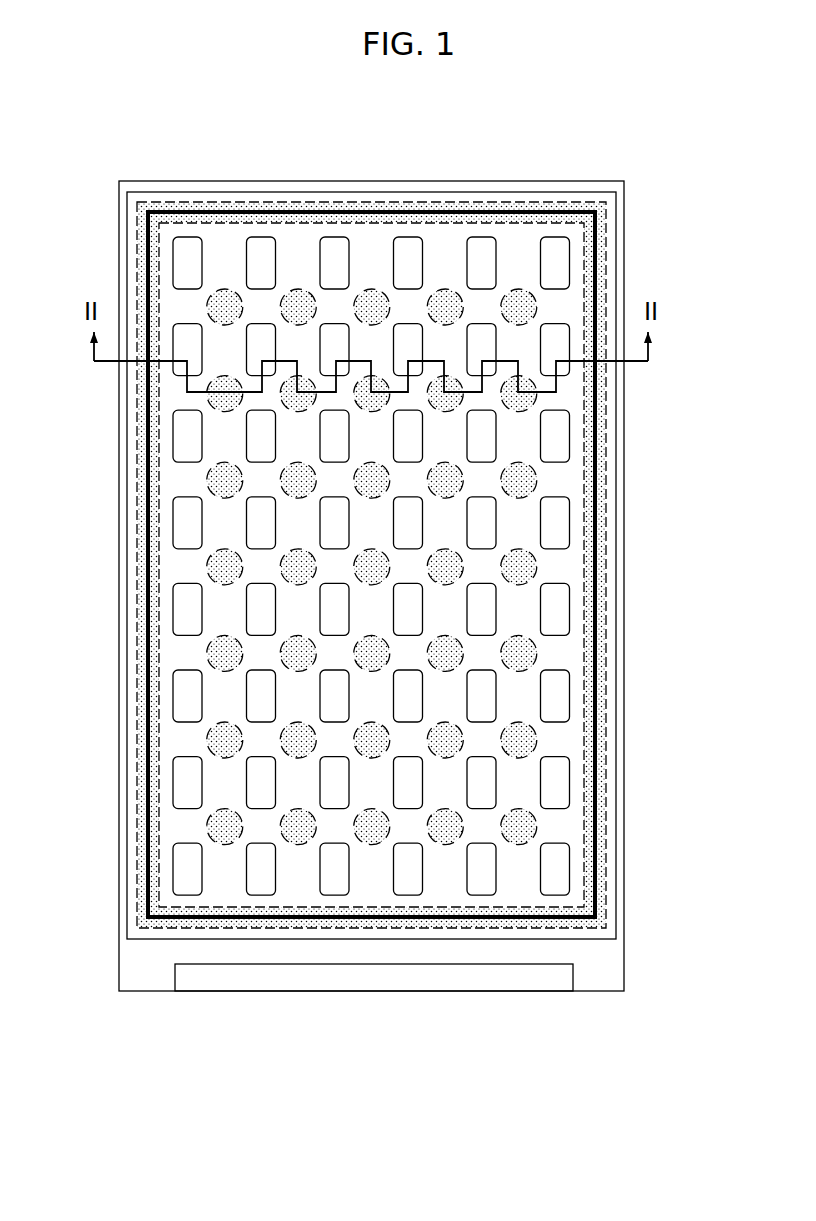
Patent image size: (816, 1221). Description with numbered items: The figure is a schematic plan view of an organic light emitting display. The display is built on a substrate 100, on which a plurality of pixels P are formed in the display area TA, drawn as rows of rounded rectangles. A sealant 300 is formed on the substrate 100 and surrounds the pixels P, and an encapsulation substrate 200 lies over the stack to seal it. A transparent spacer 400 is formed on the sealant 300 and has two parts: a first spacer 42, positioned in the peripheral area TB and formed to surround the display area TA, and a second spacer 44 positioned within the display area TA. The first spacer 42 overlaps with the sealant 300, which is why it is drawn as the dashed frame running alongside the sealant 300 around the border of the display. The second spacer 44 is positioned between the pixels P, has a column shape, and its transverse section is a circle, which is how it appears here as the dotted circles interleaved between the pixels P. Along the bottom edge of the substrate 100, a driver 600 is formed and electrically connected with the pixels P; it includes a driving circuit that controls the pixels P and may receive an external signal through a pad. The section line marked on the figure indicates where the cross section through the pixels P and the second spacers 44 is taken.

The substrate 100 is at (624, 963).
The encapsulation substrate 200 is at (616, 893).
The sealant 300 is at (595, 523).
The transparent spacer 400 is at (442, 565).
The first spacer 42 is at (584, 648).
The second spacer 44 is at (535, 736).
The driver 600 is at (525, 985).
The pixel P is at (570, 786).
The display area TA is at (552, 825).
The peripheral area TB is at (598, 974).